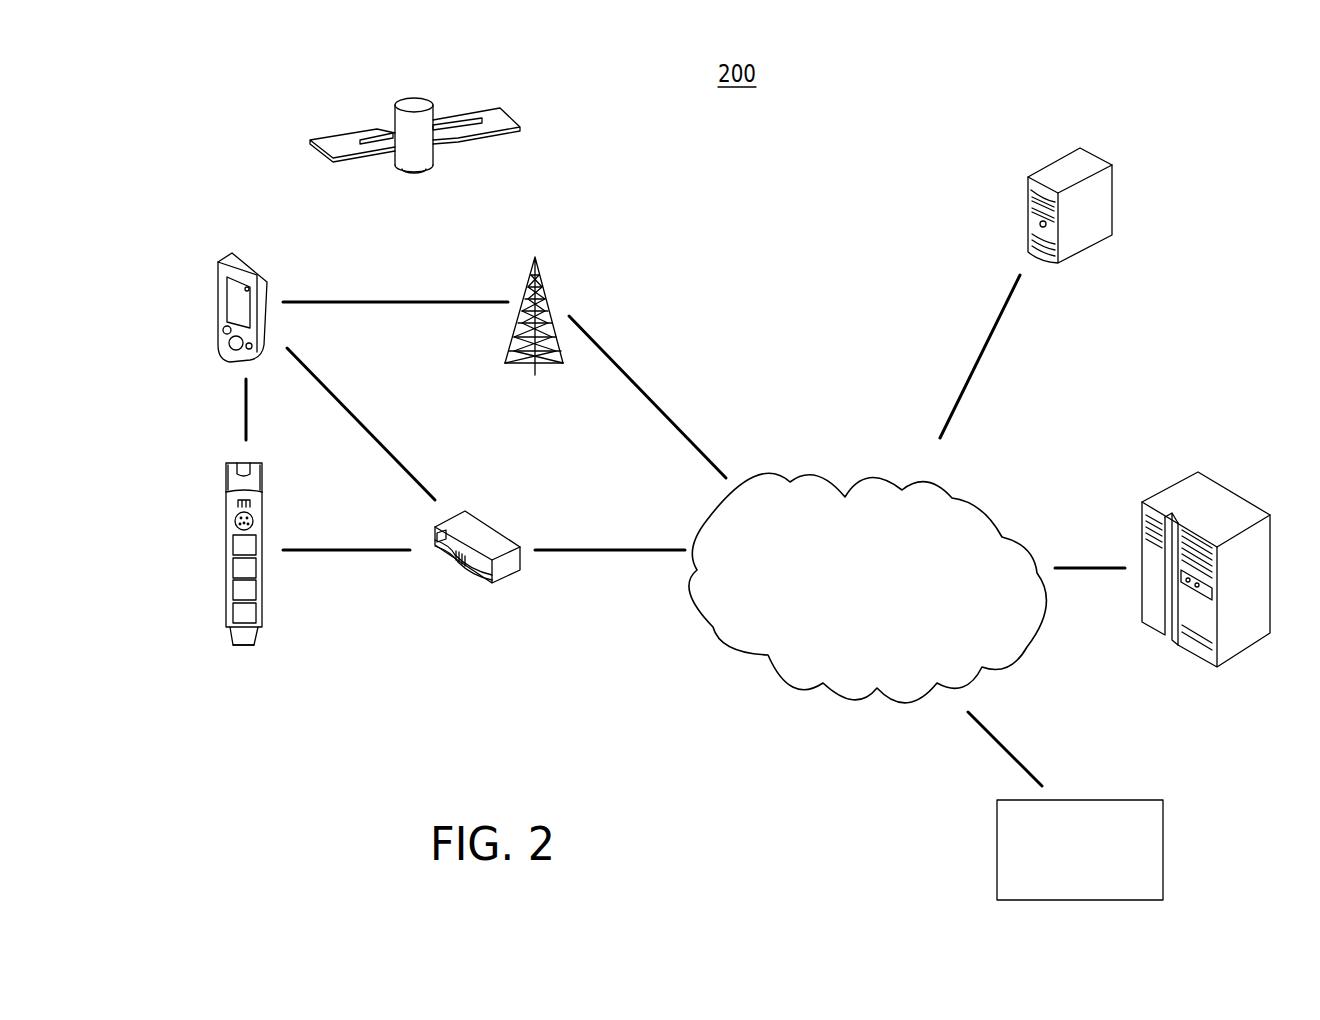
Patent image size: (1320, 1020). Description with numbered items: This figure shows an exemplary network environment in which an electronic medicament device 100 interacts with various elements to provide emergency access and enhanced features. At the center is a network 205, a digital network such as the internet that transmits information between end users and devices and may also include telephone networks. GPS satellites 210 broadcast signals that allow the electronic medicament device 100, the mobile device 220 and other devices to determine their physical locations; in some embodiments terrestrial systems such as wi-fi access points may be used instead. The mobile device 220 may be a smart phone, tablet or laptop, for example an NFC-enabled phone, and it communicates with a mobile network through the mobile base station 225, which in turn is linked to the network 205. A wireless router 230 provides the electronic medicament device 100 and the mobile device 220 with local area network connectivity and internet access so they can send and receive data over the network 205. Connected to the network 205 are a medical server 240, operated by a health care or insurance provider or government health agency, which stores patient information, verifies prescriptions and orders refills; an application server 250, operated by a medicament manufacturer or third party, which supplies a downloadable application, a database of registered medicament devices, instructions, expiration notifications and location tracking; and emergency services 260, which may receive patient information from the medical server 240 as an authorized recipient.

The electronic medicament device 100 is at (226, 548).
The network 205 is at (868, 477).
The GPS satellites 210 is at (390, 119).
The mobile device 220 is at (217, 282).
The mobile base station 225 is at (527, 292).
The wireless router 230 is at (500, 524).
The medical server 240 is at (1050, 165).
The application server 250 is at (1180, 480).
The emergency services 260 is at (997, 835).